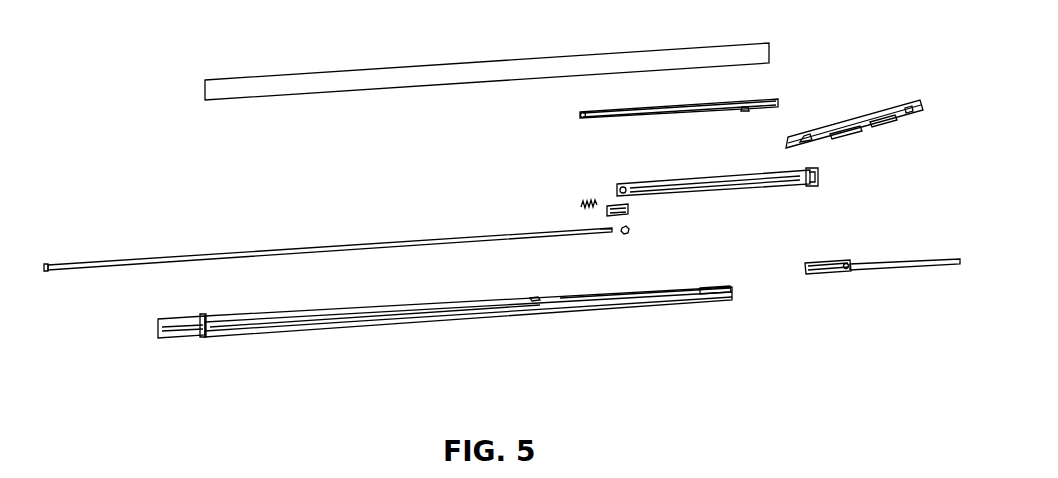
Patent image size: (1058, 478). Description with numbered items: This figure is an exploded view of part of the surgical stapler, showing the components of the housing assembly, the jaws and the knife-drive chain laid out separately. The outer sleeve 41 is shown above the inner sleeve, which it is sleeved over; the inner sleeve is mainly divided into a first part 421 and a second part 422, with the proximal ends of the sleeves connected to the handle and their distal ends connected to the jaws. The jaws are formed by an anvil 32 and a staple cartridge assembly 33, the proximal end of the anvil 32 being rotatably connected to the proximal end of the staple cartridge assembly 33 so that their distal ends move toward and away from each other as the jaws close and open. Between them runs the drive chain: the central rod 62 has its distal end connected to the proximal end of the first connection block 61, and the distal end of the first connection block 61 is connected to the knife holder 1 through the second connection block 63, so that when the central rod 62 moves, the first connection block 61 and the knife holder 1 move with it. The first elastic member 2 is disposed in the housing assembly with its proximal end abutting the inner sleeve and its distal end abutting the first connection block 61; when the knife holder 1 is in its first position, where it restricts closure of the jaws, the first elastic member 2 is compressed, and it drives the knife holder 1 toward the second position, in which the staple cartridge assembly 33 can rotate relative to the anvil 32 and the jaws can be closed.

The outer sleeve 41 is at (250, 88).
The second part of the inner sleeve 422 is at (778, 100).
The staple cartridge assembly 33 is at (920, 108).
The knife holder 1 is at (695, 185).
The first elastic member 2 is at (582, 200).
The first connection block 61 is at (612, 205).
The second connection block 63 is at (629, 233).
The central rod 62 is at (263, 245).
The anvil 32 is at (849, 263).
The first part of the inner sleeve 421 is at (158, 327).